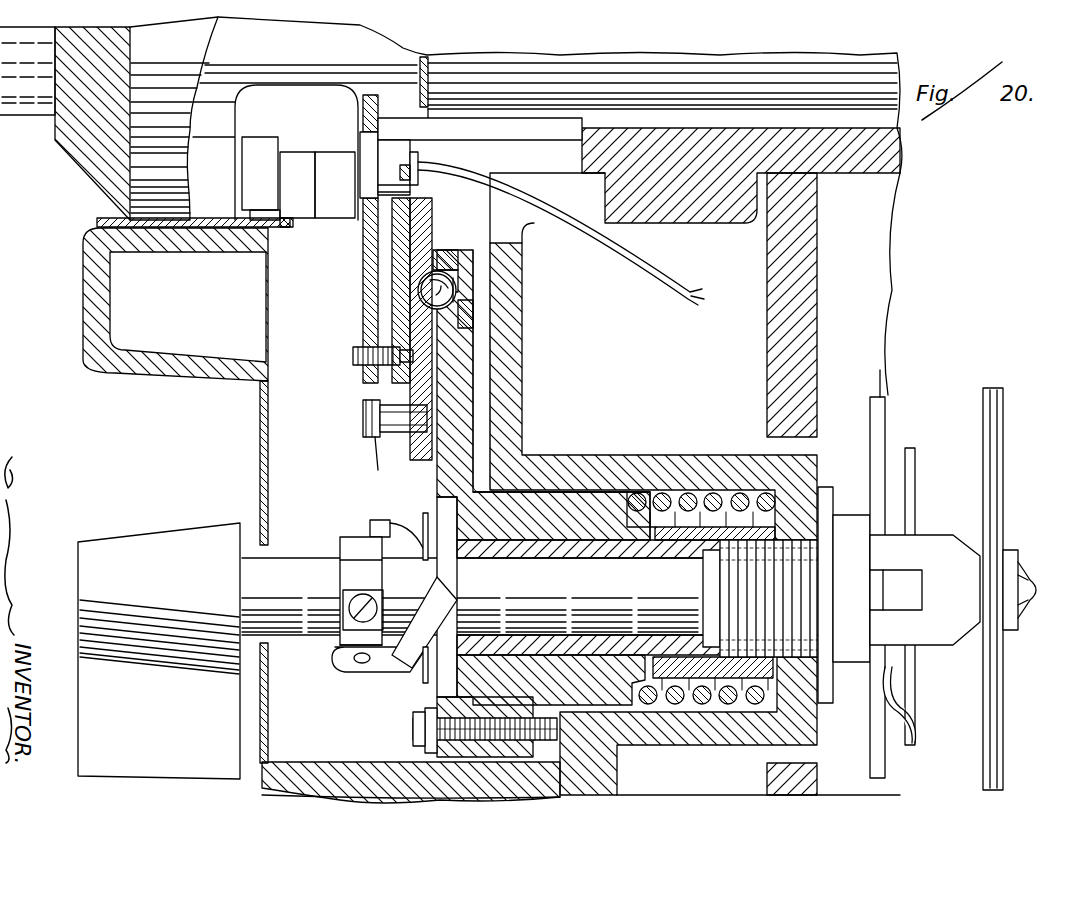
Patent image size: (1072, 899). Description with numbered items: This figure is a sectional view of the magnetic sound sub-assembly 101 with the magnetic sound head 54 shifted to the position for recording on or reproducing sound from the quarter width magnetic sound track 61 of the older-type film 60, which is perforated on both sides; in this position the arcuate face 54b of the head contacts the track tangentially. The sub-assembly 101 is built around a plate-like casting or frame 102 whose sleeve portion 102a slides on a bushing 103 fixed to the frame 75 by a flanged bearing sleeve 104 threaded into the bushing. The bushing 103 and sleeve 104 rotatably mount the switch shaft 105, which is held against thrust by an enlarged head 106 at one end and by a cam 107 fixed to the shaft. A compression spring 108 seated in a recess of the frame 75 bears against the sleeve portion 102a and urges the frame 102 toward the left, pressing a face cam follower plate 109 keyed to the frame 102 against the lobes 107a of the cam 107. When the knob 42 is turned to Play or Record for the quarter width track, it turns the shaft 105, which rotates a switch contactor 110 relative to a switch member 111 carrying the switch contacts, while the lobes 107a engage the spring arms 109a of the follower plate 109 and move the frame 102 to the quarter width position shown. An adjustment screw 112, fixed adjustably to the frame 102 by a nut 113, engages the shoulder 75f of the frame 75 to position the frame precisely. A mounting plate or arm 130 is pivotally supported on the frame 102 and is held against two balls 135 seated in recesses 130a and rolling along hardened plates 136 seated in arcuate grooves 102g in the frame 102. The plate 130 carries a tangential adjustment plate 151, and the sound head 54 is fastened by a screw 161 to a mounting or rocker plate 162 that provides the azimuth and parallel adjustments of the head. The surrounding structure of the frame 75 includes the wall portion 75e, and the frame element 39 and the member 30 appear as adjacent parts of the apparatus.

The frame member 39 is at (70, 123).
The magnetic sound head 54 is at (318, 124).
The arcuate face 54b is at (295, 228).
The film 60 is at (175, 228).
The quarter width magnetic sound track 61 is at (268, 235).
The screw 161 is at (405, 148).
The mounting plate 130 is at (428, 217).
The arcuate grooves 102g is at (455, 262).
The balls 135 is at (430, 290).
The recesses 130a is at (450, 291).
The tangential adjustment plate 151 is at (400, 322).
The hardened plates 136 is at (465, 325).
The mounting or rocker plate 162 is at (365, 337).
The frame 75 is at (518, 355).
The frame 30 is at (800, 298).
The unitary magnetic sound sub-assembly 101 is at (301, 446).
The frame 102 is at (440, 472).
The sleeve portion 102a is at (530, 500).
The housing wall 75e is at (668, 457).
The compression spring 108 is at (715, 500).
The flanged bearing sleeve 104 is at (797, 557).
The switch member 111 is at (880, 422).
The switch contactor 110 is at (910, 468).
The enlarged head 106 is at (930, 548).
The knob 42 is at (137, 542).
The lobes 107a is at (400, 535).
The spring arms 109a is at (422, 520).
The cam 107 is at (375, 592).
The face cam follower plate 109 is at (458, 578).
The bushing 103 is at (553, 545).
The switch shaft 105 is at (632, 605).
The nut 113 is at (424, 735).
The adjustment screw 112 is at (510, 735).
The shoulder 75f is at (612, 765).